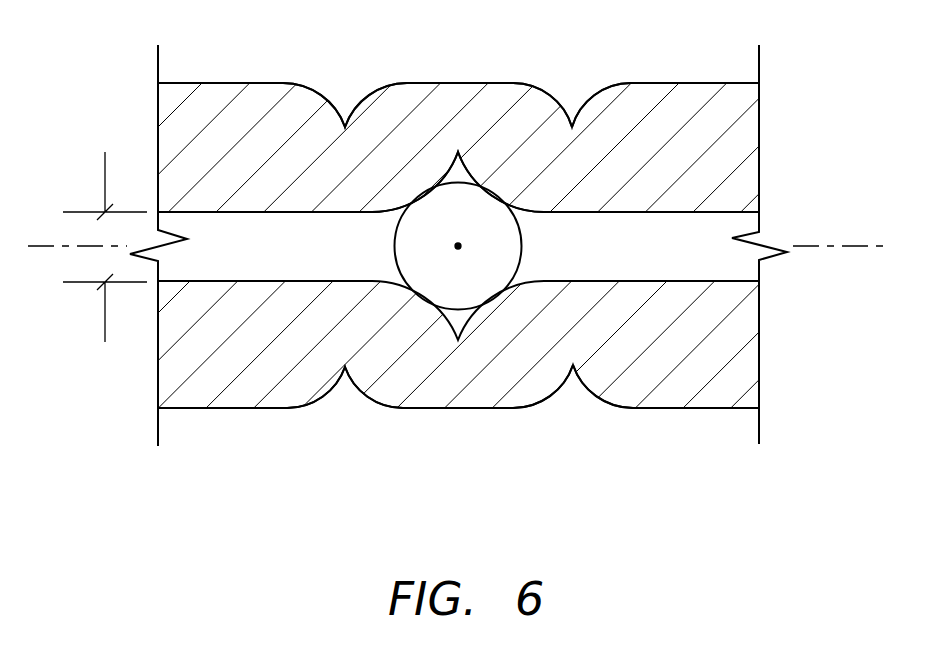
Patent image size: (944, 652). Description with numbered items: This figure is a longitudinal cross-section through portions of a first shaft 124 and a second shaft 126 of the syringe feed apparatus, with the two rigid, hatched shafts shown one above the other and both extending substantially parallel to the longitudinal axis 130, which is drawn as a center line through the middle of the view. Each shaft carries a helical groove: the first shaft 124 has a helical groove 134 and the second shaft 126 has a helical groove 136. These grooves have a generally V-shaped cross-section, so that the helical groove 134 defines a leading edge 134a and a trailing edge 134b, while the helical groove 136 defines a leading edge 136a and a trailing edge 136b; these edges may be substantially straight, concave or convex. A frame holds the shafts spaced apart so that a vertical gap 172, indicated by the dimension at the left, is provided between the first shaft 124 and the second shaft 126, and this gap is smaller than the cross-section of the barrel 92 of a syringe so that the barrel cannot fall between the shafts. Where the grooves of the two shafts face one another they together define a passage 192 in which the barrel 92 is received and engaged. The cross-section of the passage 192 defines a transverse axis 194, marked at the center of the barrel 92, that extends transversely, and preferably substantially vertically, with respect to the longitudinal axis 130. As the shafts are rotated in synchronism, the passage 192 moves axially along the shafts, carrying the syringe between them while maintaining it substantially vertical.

The barrel 92 is at (522, 245).
The first shaft 124 is at (712, 395).
The second shaft 126 is at (690, 95).
The longitudinal axis 130 is at (823, 245).
The helical groove 134 is at (326, 395).
The leading edge 134a is at (546, 397).
The trailing edge 134b is at (597, 398).
The helical groove 136 is at (371, 97).
The leading edge 136a is at (543, 88).
The trailing edge 136b is at (607, 89).
The vertical gap 172 is at (105, 262).
The passage 192 is at (502, 189).
The transverse axis 194 is at (458, 244).